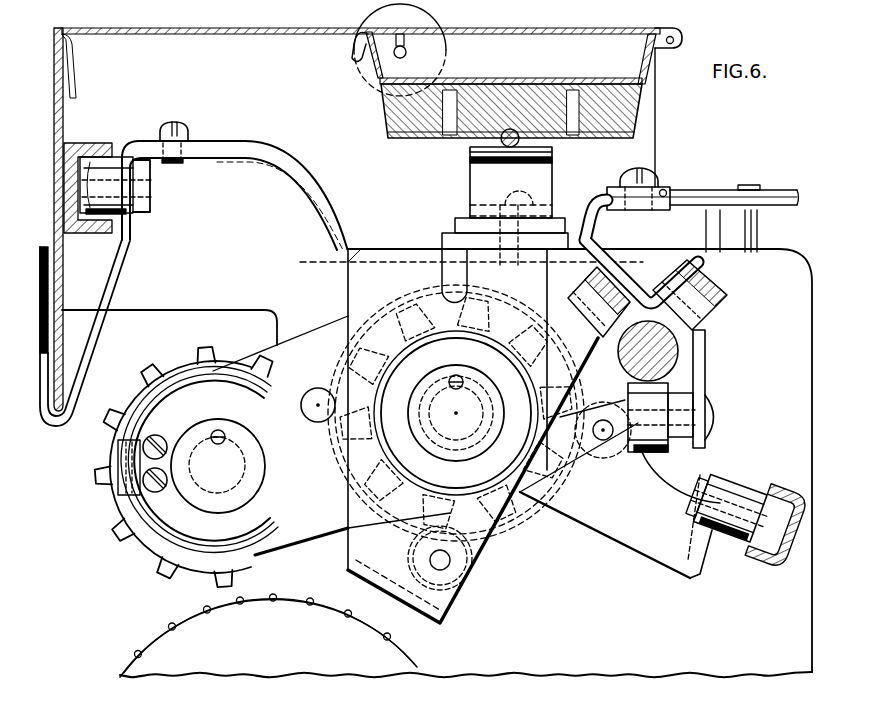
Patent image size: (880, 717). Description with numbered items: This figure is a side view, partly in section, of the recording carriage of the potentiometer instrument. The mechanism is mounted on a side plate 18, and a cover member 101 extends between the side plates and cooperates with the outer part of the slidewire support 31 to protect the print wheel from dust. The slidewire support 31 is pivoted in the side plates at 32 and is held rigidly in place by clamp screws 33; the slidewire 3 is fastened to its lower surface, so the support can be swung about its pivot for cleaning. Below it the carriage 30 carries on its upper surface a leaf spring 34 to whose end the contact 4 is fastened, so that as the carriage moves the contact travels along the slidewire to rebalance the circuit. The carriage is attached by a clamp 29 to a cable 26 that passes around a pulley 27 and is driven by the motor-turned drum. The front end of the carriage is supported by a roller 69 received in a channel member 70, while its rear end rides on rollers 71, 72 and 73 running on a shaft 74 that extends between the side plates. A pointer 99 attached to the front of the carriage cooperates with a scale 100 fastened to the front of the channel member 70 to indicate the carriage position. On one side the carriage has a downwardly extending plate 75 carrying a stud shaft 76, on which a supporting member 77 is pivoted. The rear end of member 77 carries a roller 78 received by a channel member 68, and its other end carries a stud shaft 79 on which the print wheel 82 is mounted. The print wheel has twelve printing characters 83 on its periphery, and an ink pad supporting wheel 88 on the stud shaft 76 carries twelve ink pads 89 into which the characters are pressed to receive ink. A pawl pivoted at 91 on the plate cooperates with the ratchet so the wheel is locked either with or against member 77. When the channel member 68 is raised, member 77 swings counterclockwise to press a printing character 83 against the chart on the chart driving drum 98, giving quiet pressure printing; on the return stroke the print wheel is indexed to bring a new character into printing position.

The slidewire 3 is at (550, 156).
The contact 4 is at (550, 164).
The side plate 18 is at (124, 42).
The cable 26 is at (796, 205).
The pulley 27 is at (768, 189).
The clamp 29 is at (665, 190).
The carriage 30 is at (232, 143).
The slidewire support 31 is at (518, 30).
The pivot 32 is at (677, 38).
The clamp screw 33 is at (426, 24).
The leaf spring 34 is at (470, 183).
The channel member 68 is at (764, 570).
The roller 69 is at (118, 160).
The channel member 70 is at (91, 145).
The roller 71 is at (586, 284).
The roller 72 is at (719, 292).
The roller 73 is at (652, 454).
The shaft 74 is at (668, 352).
The plate 75 is at (346, 276).
The stud shaft 76 is at (462, 428).
The supporting member 77 is at (624, 546).
The roller 78 is at (740, 474).
The stud shaft 79 is at (232, 494).
The print wheel 82 is at (171, 362).
The printing characters 83 is at (112, 545).
The ink pad supporting wheel 88 is at (400, 308).
The ink pads 89 is at (344, 322).
The pawl pivot 91 is at (455, 568).
The chart driving drum 98 is at (316, 610).
The pointer 99 is at (44, 282).
The scale 100 is at (55, 176).
The cover member 101 is at (205, 29).